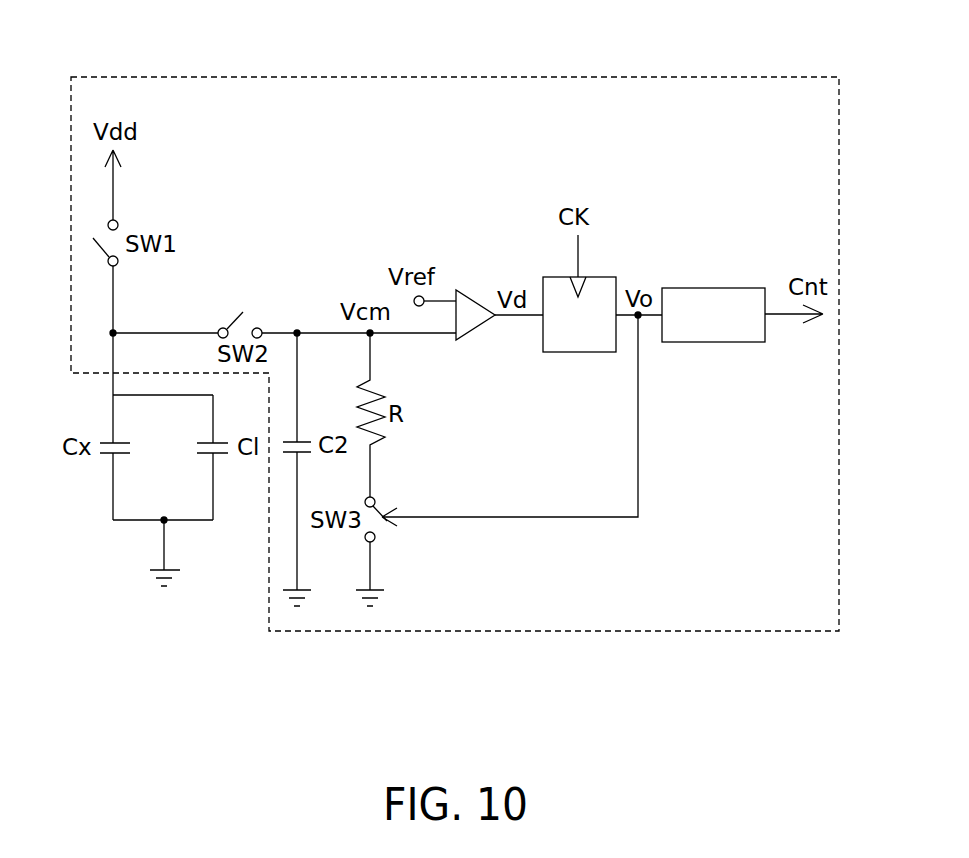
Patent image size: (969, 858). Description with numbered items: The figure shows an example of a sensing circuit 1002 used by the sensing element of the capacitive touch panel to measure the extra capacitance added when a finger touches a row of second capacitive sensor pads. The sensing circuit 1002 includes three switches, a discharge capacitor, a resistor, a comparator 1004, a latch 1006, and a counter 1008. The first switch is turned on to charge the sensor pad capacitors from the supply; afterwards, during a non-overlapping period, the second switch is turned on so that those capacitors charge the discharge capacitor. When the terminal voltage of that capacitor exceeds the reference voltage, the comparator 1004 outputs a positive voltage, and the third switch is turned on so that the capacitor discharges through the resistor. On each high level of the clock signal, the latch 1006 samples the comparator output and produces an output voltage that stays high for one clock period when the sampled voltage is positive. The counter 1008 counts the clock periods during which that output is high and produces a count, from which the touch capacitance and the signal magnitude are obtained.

The sensing circuit 1002 is at (577, 631).
The comparator 1004 is at (478, 297).
The latch 1006 is at (610, 277).
The counter 1008 is at (740, 288).